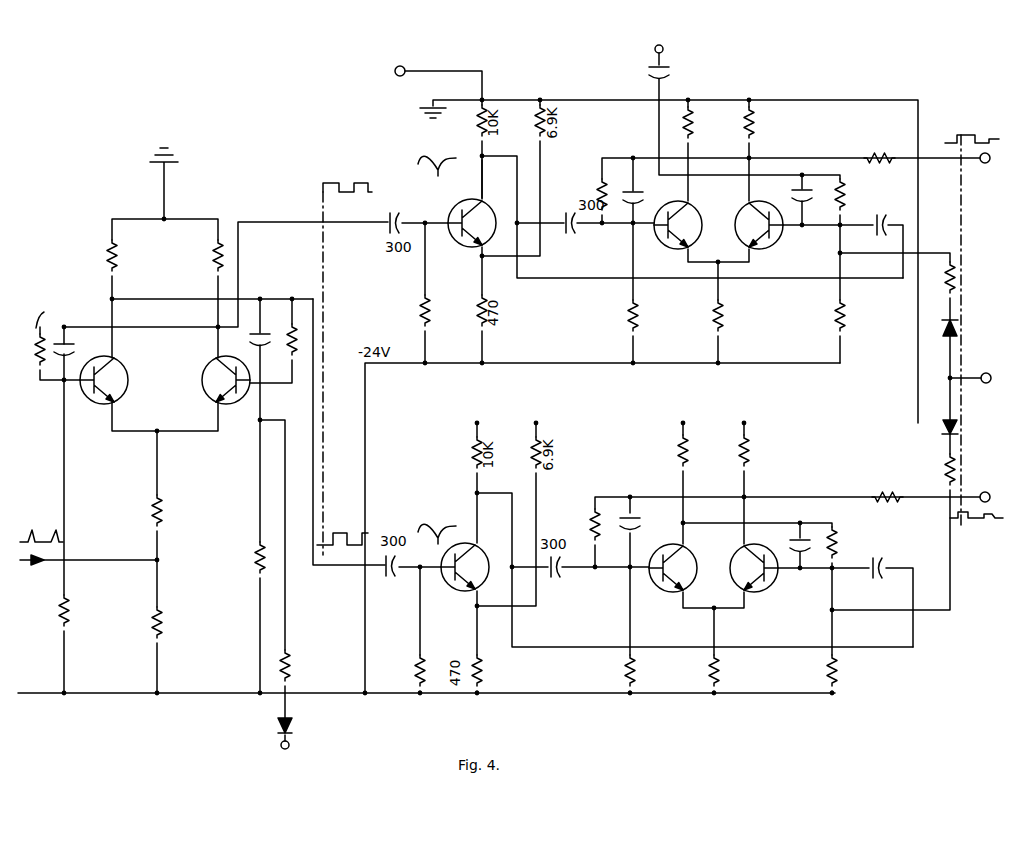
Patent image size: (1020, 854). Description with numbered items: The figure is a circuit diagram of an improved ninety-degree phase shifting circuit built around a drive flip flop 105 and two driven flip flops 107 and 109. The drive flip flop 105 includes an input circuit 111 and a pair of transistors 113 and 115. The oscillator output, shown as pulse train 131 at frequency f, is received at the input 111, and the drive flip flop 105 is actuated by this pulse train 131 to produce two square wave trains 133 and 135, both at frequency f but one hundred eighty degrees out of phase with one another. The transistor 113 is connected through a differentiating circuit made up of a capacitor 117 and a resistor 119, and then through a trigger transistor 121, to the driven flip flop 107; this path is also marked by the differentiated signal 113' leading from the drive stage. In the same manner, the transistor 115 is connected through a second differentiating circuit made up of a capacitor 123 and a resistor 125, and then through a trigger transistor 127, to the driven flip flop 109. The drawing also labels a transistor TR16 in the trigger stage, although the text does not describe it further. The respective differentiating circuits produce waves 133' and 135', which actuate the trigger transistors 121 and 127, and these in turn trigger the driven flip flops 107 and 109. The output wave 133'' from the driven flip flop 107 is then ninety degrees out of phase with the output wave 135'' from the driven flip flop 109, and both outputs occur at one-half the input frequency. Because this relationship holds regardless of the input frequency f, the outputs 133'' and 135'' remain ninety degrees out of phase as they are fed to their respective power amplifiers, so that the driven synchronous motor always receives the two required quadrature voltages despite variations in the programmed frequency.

The drive flip flop 105 is at (50, 700).
The driven flip flop 107 is at (845, 374).
The driven flip flop 109 is at (835, 701).
The input circuit 111 is at (105, 563).
The transistor 113 is at (116, 370).
The wave 113' is at (349, 443).
The transistor 115 is at (205, 399).
The transistor TR16 is at (466, 215).
The capacitor 117 is at (393, 204).
The resistor 119 is at (419, 303).
The trigger transistor 121 is at (484, 203).
The capacitor 123 is at (389, 584).
The resistor 125 is at (422, 662).
The trigger transistor 127 is at (460, 578).
The wave form 131 is at (45, 520).
The square wave train 133 is at (347, 356).
The wave 133' is at (438, 151).
The output wave 133'' is at (972, 309).
The square wave train 135 is at (342, 529).
The wave 135' is at (439, 519).
The output wave 135'' is at (978, 536).